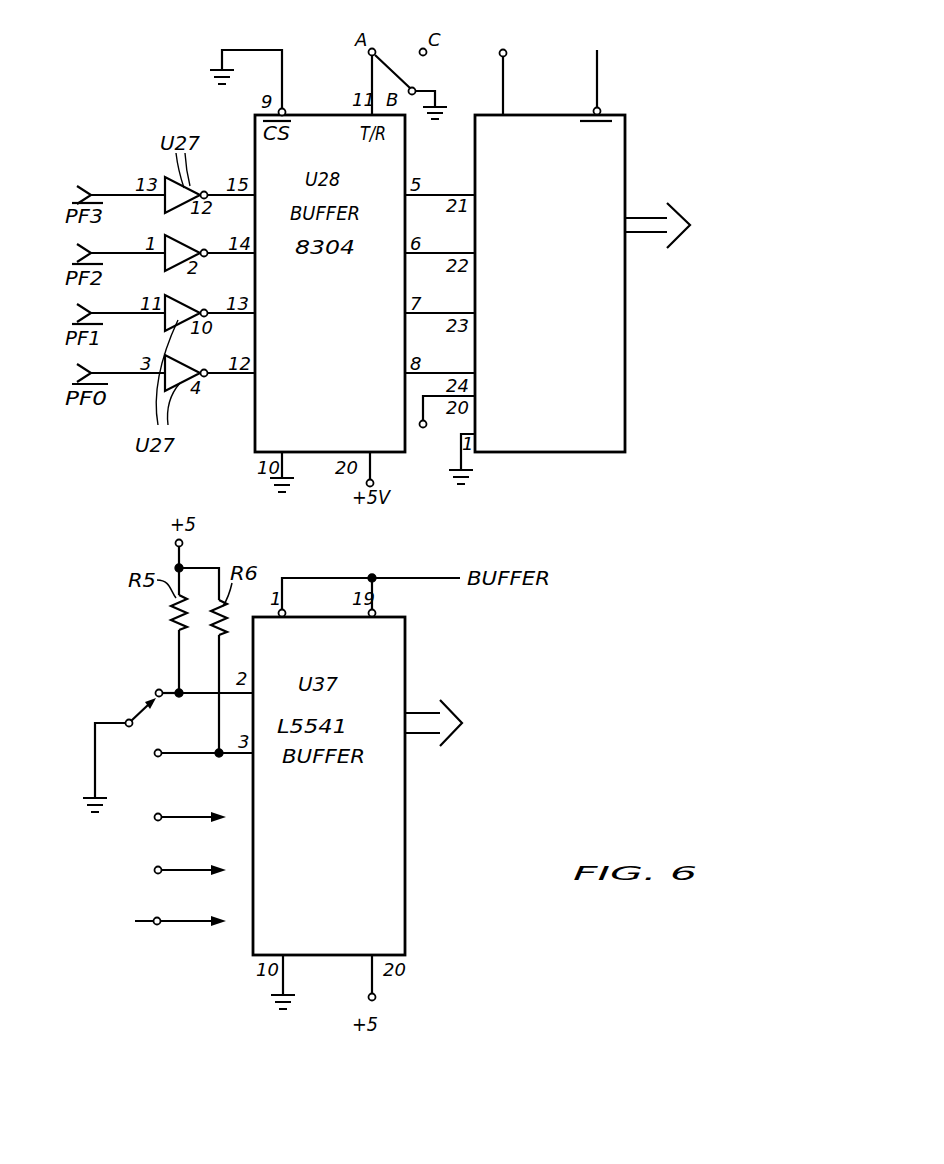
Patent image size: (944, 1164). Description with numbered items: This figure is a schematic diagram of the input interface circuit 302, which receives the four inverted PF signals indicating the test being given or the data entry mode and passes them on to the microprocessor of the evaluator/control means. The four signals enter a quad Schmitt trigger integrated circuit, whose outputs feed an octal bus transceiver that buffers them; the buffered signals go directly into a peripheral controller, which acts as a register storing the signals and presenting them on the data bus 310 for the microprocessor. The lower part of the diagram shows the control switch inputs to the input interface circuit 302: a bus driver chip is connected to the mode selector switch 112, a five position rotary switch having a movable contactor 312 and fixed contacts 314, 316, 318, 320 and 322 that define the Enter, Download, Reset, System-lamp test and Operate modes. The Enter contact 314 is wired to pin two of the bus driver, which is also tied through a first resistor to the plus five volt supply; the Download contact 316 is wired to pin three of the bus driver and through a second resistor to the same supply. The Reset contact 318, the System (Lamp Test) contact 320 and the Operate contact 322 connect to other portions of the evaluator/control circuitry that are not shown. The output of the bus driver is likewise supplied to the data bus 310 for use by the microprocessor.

The input interface circuit 302 is at (606, 506).
The data bus 310 is at (644, 217).
The mode selector switch 112 is at (145, 740).
The movable contactor 312 is at (143, 711).
The Enter contact 314 is at (166, 696).
The Download contact 316 is at (159, 751).
The Reset contact 318 is at (160, 813).
The System (Lamp Test) contact 320 is at (160, 866).
The Operate contact 322 is at (135, 921).